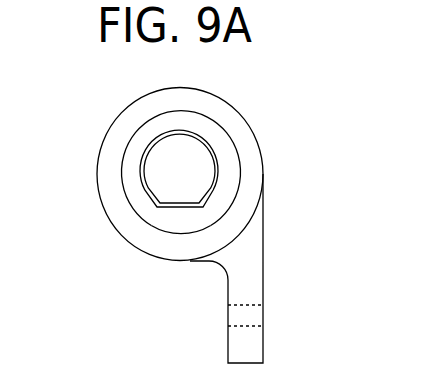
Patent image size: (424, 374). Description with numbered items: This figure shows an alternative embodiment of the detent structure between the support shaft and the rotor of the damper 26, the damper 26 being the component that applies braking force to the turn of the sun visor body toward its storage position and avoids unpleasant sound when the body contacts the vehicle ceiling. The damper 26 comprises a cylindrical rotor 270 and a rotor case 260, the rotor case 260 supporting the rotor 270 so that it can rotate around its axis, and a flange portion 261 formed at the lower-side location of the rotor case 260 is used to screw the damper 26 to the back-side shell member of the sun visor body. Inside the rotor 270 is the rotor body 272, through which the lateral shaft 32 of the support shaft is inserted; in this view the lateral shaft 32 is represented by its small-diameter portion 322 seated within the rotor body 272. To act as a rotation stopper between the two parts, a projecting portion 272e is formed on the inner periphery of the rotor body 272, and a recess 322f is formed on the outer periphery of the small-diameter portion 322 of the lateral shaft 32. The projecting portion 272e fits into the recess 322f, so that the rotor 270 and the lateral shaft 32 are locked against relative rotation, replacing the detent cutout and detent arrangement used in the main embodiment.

The damper 26 is at (219, 217).
The rotor case 260 is at (242, 274).
The flange portion 261 is at (228, 338).
The rotor 270 is at (210, 132).
The rotor body 272 is at (136, 217).
The projecting portion 272e is at (179, 218).
The small-diameter portion 322 is at (217, 204).
The lateral shaft 32 is at (217, 204).
The recess 322f is at (167, 211).